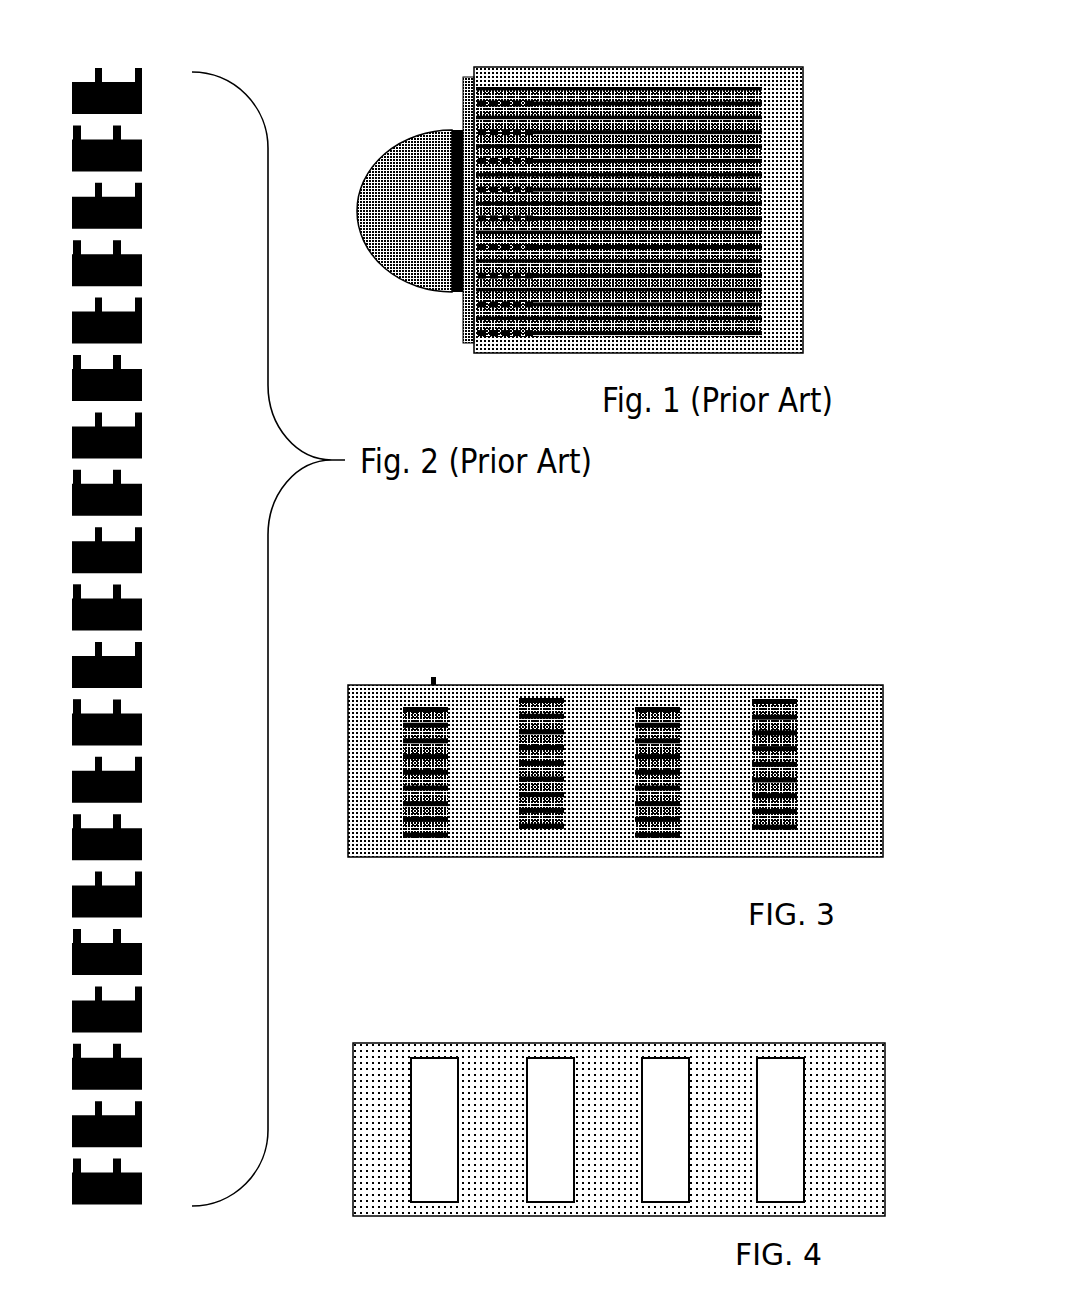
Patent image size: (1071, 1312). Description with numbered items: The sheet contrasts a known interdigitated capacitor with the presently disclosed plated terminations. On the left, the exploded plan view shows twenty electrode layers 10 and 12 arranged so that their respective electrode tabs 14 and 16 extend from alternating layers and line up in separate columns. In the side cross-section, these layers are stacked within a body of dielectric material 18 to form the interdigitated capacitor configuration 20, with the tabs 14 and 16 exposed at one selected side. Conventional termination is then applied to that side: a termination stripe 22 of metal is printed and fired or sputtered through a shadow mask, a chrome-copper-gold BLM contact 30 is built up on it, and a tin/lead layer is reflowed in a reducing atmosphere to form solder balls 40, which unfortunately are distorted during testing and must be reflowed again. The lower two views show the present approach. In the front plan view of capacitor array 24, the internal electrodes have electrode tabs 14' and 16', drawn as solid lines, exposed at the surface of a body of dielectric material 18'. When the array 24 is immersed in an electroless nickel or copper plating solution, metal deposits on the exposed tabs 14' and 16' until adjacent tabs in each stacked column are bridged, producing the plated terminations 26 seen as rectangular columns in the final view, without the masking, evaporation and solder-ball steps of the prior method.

In FIG. 1, the electrode layers 10 is at (762, 147).
In FIG. 2, the electrode layers 10 is at (142, 320).
In FIG. 1, the electrode layers 12 is at (762, 302).
In FIG. 2, the electrode layers 12 is at (140, 495).
In FIG. 1, the electrode tabs 14 is at (620, 254).
In FIG. 2, the electrode tabs 14 is at (63, 70).
In FIG. 1, the electrode tabs 16 is at (480, 368).
In FIG. 2, the electrode tabs 16 is at (50, 649).
In FIG. 1, the body of dielectric material 18 is at (665, 210).
In FIG. 1, the interdigitated capacitor (IDC) configuration 20 is at (592, 205).
In FIG. 1, the termination stripe 22 is at (462, 335).
In FIG. 1, the BLM contact 30 is at (457, 128).
In FIG. 1, the solder balls 40 is at (397, 162).
In FIG. 3, the capacitor array configuration 24 is at (608, 735).
In FIG. 4, the capacitor array configuration 24 is at (619, 1091).
In FIG. 3, the body of dielectric material 18' is at (615, 735).
In FIG. 4, the body of dielectric material 18' is at (619, 1103).
In FIG. 3, the electrode tabs 16' is at (658, 739).
In FIG. 3, the electrode tabs 14' is at (390, 772).
In FIG. 4, the plated terminations 26 is at (672, 1075).